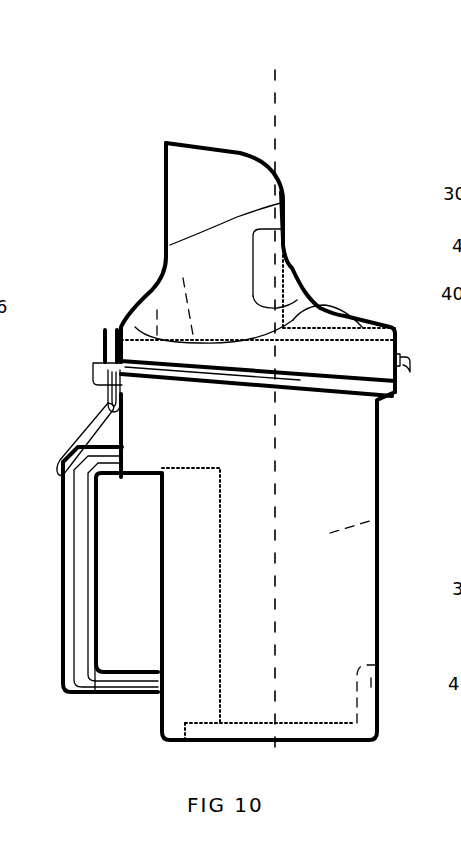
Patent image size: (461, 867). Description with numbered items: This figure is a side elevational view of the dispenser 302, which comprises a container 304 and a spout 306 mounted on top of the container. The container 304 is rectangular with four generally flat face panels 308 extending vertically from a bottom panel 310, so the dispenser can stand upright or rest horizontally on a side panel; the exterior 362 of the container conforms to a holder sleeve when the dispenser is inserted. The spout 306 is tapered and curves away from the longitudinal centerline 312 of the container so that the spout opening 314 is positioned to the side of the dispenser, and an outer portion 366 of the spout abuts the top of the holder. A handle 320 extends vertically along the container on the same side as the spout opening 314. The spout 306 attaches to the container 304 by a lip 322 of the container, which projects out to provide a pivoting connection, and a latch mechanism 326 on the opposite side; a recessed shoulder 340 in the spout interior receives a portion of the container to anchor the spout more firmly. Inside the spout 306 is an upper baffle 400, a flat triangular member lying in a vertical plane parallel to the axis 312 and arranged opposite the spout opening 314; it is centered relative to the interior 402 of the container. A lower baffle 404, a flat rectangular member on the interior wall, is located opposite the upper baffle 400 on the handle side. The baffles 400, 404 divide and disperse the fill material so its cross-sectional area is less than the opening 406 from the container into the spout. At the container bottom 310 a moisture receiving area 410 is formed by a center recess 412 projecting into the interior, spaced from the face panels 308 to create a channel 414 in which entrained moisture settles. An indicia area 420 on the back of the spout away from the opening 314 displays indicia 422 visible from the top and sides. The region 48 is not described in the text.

The longitudinal centerline 312 is at (275, 410).
The spout 306 is at (212, 185).
The spout opening 314 is at (166, 182).
The shoulder region 48 is at (303, 200).
The dispenser 302 is at (84, 236).
The indicia 422 is at (287, 254).
The upper baffle 400 is at (323, 292).
The recessed shoulder 340 is at (152, 262).
The opening from the container into the spout 406 is at (147, 298).
The indicia area 420 is at (323, 307).
The latch mechanism 326 is at (87, 395).
The lip 322 is at (418, 378).
The outer portion of the spout 366 is at (307, 381).
The container 304 is at (378, 468).
The container interior 402 is at (386, 510).
The handle 320 is at (62, 573).
The face panel 308 is at (158, 580).
The exterior of the container 362 is at (328, 615).
The channel 414 is at (362, 672).
The moisture receiving area 410 is at (362, 727).
The lower baffle 404 is at (190, 703).
The bottom panel 310 is at (171, 748).
The center recess 412 is at (327, 750).